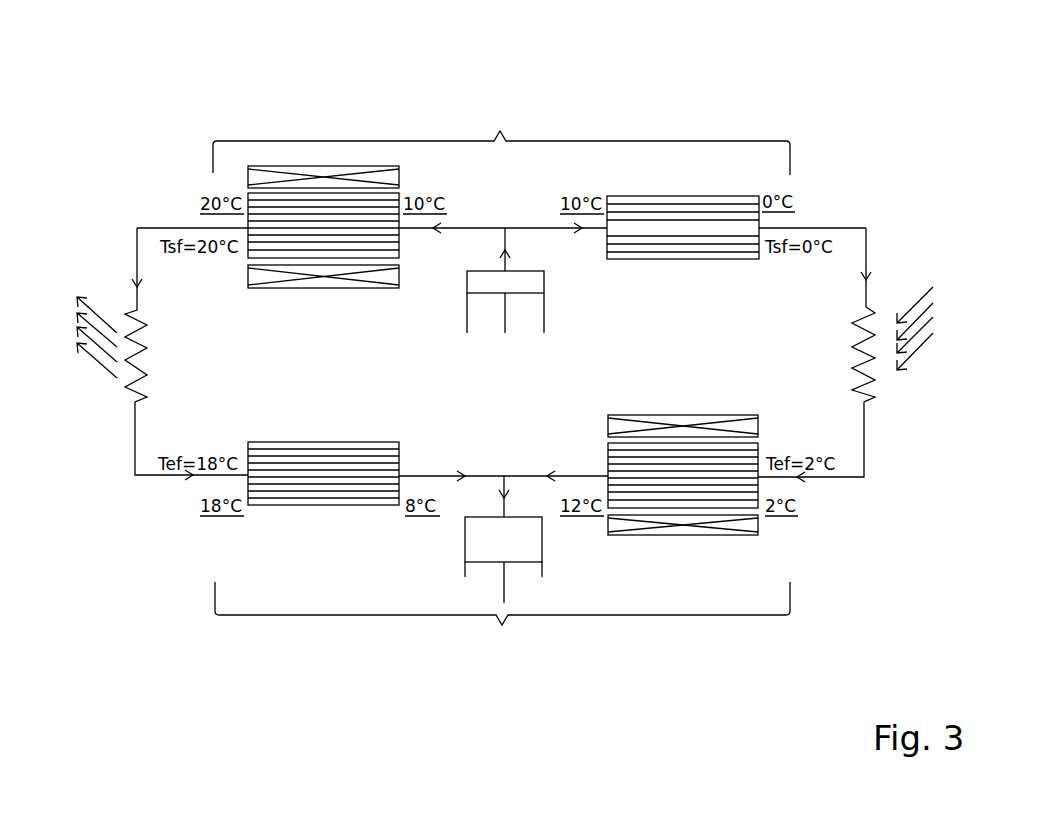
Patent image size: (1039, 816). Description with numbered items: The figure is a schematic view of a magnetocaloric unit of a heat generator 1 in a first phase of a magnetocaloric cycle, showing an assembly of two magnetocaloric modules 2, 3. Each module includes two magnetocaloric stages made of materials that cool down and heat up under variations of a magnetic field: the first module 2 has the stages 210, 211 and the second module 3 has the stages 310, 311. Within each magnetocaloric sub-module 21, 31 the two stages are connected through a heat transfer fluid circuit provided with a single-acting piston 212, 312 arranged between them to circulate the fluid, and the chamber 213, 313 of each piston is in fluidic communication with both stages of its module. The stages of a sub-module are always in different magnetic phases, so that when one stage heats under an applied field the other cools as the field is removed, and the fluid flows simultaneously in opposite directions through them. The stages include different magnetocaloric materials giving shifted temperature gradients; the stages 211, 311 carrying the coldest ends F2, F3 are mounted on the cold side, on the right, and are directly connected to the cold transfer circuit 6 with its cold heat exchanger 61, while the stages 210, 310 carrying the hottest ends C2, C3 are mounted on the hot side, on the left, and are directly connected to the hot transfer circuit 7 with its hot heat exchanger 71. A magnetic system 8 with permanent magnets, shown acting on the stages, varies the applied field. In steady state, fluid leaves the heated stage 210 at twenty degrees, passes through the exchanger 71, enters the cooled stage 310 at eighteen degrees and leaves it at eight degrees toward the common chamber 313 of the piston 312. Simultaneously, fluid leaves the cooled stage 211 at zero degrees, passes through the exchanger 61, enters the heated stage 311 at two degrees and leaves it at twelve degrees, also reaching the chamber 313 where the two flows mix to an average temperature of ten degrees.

The heat generator 1 is at (980, 126).
The magnetocaloric module 2 is at (501, 128).
The magnetocaloric sub-module 21 is at (501, 128).
The magnetocaloric module 3 is at (502, 633).
The magnetocaloric sub-module 31 is at (502, 633).
The cold transfer circuit 6 is at (884, 250).
The cold heat exchanger 61 is at (872, 392).
The hot transfer circuit 7 is at (122, 262).
The hot heat exchanger 71 is at (130, 398).
The magnetic system 8 is at (343, 275).
The magnetocaloric stage 210 is at (317, 243).
The magnetocaloric stage 211 is at (685, 240).
The single-acting piston 212 is at (552, 306).
The chamber 213 is at (467, 278).
The magnetocaloric stage 310 is at (288, 460).
The magnetocaloric stage 311 is at (655, 430).
The single-acting piston 312 is at (548, 540).
The chamber 313 is at (467, 530).
The hottest end C2 is at (248, 222).
The coldest end F2 is at (760, 212).
The hottest end C3 is at (248, 485).
The coldest end F3 is at (762, 486).